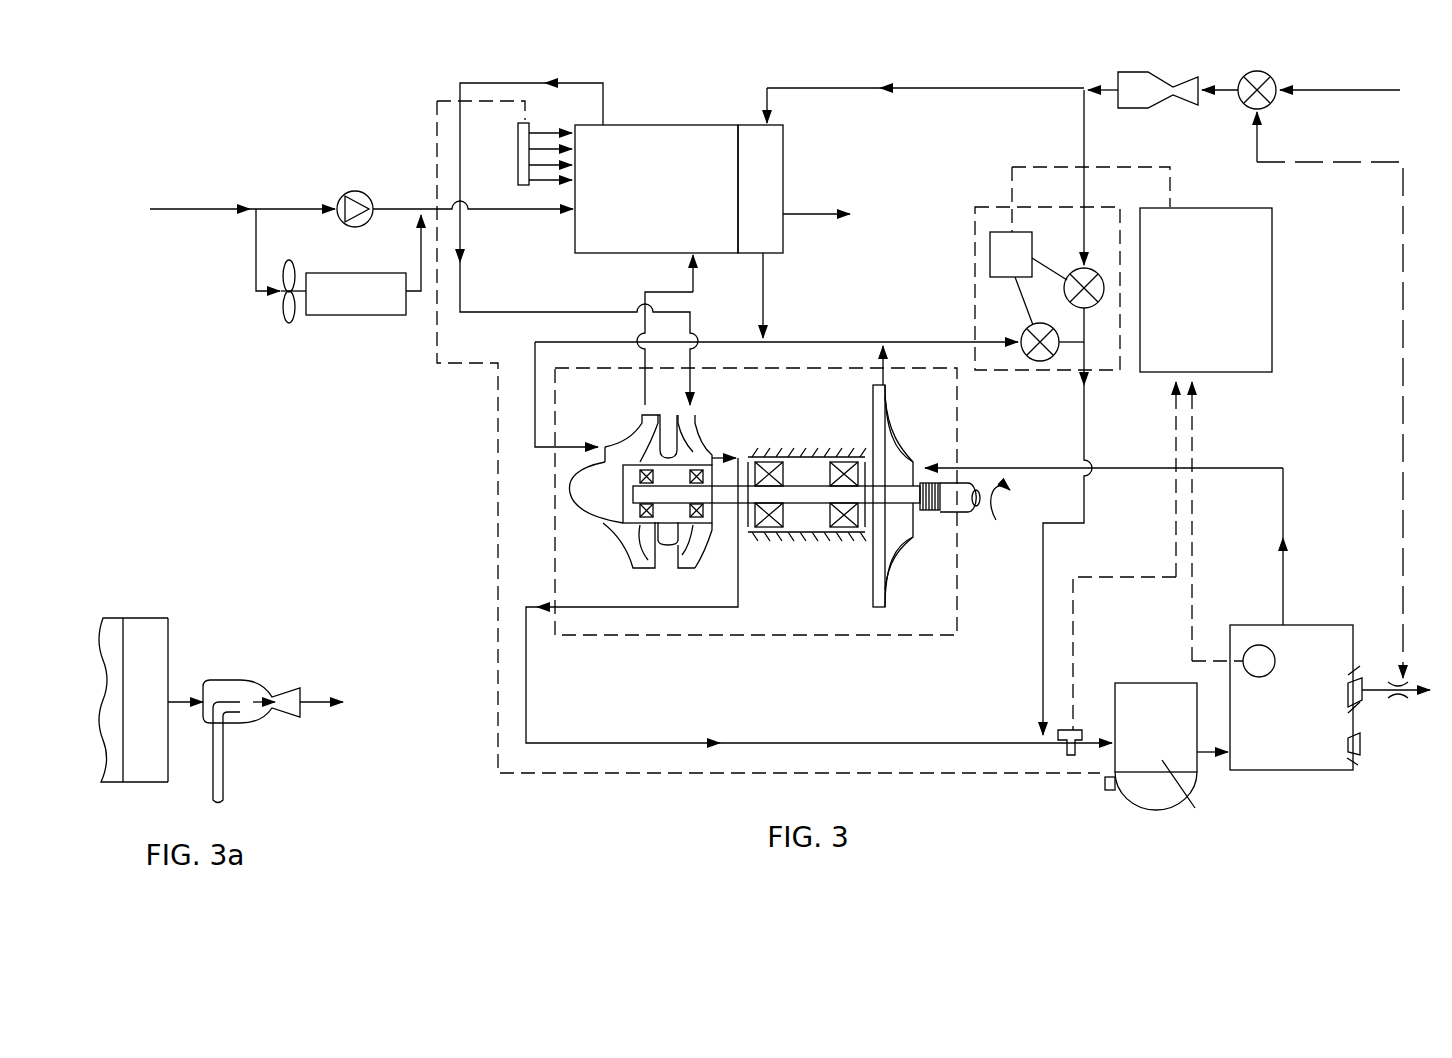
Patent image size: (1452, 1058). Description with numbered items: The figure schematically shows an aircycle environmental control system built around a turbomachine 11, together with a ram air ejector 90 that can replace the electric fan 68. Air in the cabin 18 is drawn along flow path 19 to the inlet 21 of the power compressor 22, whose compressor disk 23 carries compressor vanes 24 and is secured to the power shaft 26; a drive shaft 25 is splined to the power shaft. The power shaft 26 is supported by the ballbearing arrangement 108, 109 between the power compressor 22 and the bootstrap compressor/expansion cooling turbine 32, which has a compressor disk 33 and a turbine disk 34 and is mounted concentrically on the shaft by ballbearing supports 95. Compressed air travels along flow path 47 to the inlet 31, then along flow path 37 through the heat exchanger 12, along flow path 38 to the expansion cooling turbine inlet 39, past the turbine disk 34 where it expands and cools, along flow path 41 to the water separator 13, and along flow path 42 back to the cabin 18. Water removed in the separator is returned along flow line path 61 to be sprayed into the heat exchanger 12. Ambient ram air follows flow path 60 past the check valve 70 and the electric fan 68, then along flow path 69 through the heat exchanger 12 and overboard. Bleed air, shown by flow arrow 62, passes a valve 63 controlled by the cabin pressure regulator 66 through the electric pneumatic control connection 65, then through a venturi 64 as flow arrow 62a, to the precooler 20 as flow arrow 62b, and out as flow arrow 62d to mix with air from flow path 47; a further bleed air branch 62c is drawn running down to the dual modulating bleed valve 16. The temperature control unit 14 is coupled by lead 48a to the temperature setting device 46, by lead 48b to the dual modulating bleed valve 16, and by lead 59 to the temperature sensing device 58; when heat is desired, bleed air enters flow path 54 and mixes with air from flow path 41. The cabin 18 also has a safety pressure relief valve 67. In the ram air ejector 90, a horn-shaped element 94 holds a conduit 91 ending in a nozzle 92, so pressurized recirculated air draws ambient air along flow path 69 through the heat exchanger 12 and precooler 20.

In FIG. 3, the turbomachine 11 is at (598, 638).
In FIG. 3, the heat exchanger 12 is at (613, 255).
In FIG. 3A, the heat exchanger 12 is at (105, 630).
In FIG. 3, the water separator 13 is at (1138, 800).
In FIG. 3, the temperature control unit 14 is at (1272, 265).
In FIG. 3, the electric, motor-operated, dual modulating bleed valve 16 is at (990, 205).
In FIG. 3, the cabin 18 is at (1300, 623).
In FIG. 3, the flow path 19 is at (1258, 470).
In FIG. 3, the precooler 20 is at (783, 140).
In FIG. 3A, the precooler 20 is at (165, 620).
In FIG. 3, the inlet 21 is at (916, 460).
In FIG. 3, the power compressor 22 is at (897, 589).
In FIG. 3, the compressor disk 23 is at (873, 416).
In FIG. 3, the compressor vanes 24 is at (892, 424).
In FIG. 3, the drive shaft 25 is at (970, 486).
In FIG. 3, the power shaft 26 is at (901, 505).
In FIG. 3, the inlet 31 is at (600, 446).
In FIG. 3, the bootstrap compressor/expansion cooling turbine 32 is at (668, 594).
In FIG. 3, the compressor disk 33 is at (645, 450).
In FIG. 3, the turbine disk 34 is at (700, 450).
In FIG. 3, the flow path 37 is at (695, 282).
In FIG. 3, the flow path 38 is at (459, 236).
In FIG. 3, the expansion cooling turbine inlet 39 is at (689, 415).
In FIG. 3, the flow path 41 is at (620, 743).
In FIG. 3, the flow path 42 is at (1202, 753).
In FIG. 3, the temperature setting device 46 is at (1250, 650).
In FIG. 3, the flow path 47 is at (868, 341).
In FIG. 3, the lead 48a is at (1193, 508).
In FIG. 3, the lead 48b is at (1172, 183).
In FIG. 3, the flow path 54 is at (1084, 494).
In FIG. 3, the temperature sensing device 58 is at (1076, 728).
In FIG. 3, the lead 59 is at (1085, 580).
In FIG. 3, the flow path 60 is at (218, 207).
In FIG. 3, the flow line path 61 is at (728, 778).
In FIG. 3, the flow arrow 62 is at (1303, 94).
In FIG. 3, the flow arrow 62a is at (1094, 86).
In FIG. 3, the flow arrow 62b is at (918, 86).
In FIG. 3, the control valve 62c is at (1082, 135).
In FIG. 3, the flow arrow 62d is at (766, 290).
In FIG. 3, the valve 63 is at (1277, 72).
In FIG. 3, the venturi 64 is at (1165, 76).
In FIG. 3, the electric pneumatic control connection 65 is at (1401, 398).
In FIG. 3, the cabin pressure regulator 66 is at (1362, 680).
In FIG. 3, the safety pressure relief valve 67 is at (1362, 742).
In FIG. 3, the electric fan 68 is at (330, 315).
In FIG. 3, the flow path 69 is at (413, 206).
In FIG. 3A, the flow path 69 is at (183, 694).
In FIG. 3, the check valve 70 is at (344, 196).
In FIG. 3A, the ram air ejector 90 is at (242, 670).
In FIG. 3A, the conduit 91 is at (224, 787).
In FIG. 3A, the nozzle 92 is at (248, 714).
In FIG. 3A, the horn-shaped element 94 is at (278, 688).
In FIG. 3, the ballbearing support 95 is at (636, 513).
In FIG. 3, the ballbearing 108 is at (845, 527).
In FIG. 3, the ballbearing 109 is at (766, 527).